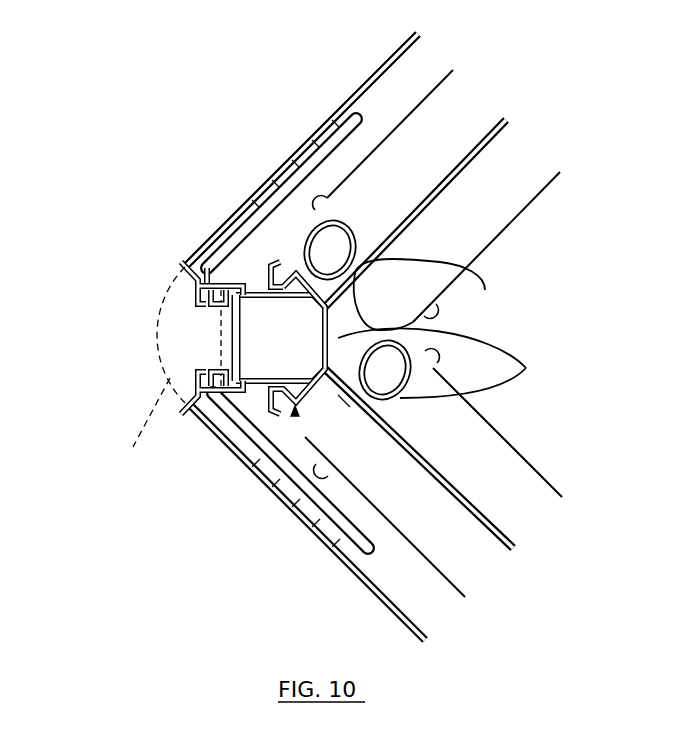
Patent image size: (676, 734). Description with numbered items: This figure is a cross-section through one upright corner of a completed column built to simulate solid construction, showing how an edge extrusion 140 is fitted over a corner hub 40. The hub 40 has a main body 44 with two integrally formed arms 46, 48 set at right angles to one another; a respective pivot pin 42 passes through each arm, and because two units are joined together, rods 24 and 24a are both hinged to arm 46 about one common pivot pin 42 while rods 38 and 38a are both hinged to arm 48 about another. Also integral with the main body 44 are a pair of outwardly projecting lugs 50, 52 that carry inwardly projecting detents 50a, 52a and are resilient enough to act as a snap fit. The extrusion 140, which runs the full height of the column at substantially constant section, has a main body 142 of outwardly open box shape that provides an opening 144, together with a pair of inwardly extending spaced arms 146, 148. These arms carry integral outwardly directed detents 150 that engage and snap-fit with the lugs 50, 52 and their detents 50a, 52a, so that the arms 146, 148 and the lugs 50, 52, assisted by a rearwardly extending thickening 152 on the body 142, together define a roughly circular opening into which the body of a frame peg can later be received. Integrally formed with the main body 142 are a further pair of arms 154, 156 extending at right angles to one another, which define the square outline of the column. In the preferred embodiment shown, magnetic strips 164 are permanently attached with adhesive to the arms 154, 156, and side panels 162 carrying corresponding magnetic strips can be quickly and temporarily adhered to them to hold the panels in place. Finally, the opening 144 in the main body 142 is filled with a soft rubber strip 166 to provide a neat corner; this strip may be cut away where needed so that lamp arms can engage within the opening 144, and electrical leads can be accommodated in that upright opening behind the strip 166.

The rod 24 is at (502, 183).
The rod 24a is at (440, 108).
The rod 38 is at (475, 440).
The rod 38a is at (437, 543).
The corner hub 40 is at (295, 412).
The pivot pin 42 is at (438, 352).
The main body 44 is at (455, 398).
The arm 46 is at (441, 310).
The arm 48 is at (352, 398).
The lug 50 is at (321, 534).
The detent 50a is at (258, 430).
The lug 52 is at (300, 262).
The detent 52a is at (272, 262).
The extrusion 140 is at (185, 265).
The main body 142 is at (222, 322).
The opening 144 is at (210, 360).
The arm 146 is at (206, 322).
The arm 148 is at (268, 380).
The detent 150 is at (260, 238).
The thickening 152 is at (206, 345).
The arm 154 is at (318, 150).
The arm 156 is at (381, 599).
The side panel 162 is at (357, 92).
The magnetic strip 164 is at (290, 182).
The soft rubber strip 166 is at (166, 406).